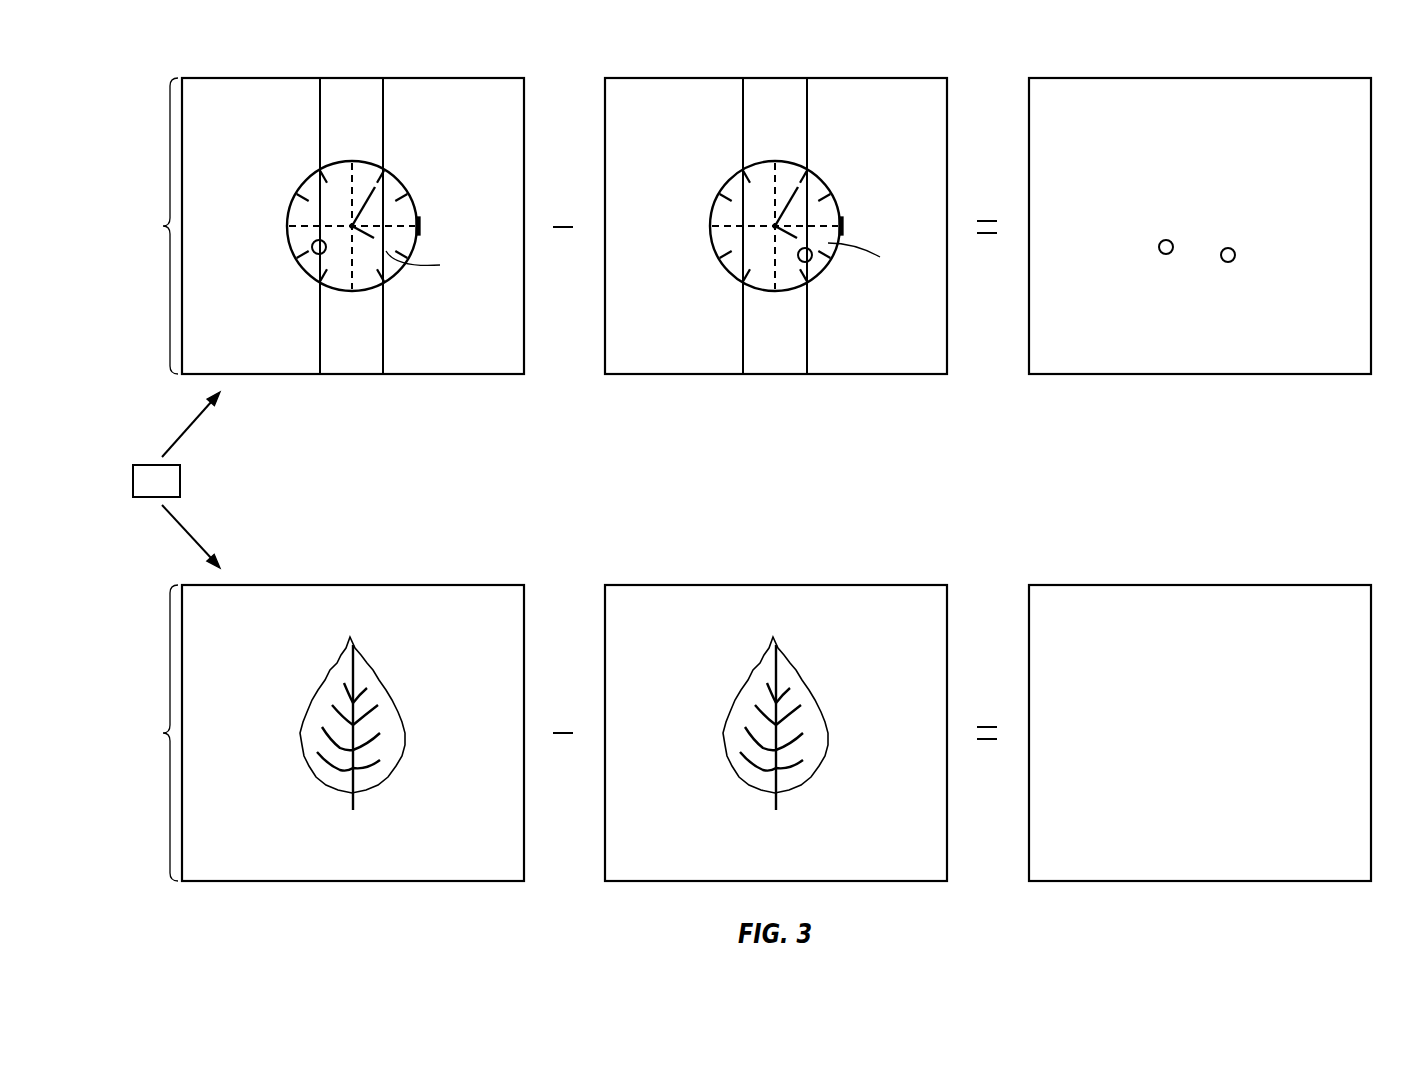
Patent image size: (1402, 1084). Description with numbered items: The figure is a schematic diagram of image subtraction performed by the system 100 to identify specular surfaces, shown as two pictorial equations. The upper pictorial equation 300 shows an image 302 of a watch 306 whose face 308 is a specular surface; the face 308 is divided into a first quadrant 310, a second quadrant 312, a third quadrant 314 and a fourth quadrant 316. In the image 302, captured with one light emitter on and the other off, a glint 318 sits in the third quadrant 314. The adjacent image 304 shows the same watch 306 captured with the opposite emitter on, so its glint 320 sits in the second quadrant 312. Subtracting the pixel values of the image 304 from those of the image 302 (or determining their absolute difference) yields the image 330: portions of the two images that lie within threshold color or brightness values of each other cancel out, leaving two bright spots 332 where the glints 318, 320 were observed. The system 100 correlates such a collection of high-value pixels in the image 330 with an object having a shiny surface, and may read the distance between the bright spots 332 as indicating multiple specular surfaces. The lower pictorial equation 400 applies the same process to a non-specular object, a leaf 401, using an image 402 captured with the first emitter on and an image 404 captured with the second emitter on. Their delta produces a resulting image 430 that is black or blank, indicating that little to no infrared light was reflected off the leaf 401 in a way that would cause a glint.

The system 100 is at (133, 480).
The pictorial equation 300 is at (163, 226).
The image 302 is at (355, 78).
The image 304 is at (778, 78).
The watch 306 is at (383, 128).
The face 308 is at (402, 183).
The first quadrant 310 is at (408, 206).
The second quadrant 312 is at (642, 262).
The third quadrant 314 is at (307, 267).
The fourth quadrant 316 is at (310, 204).
The glint 318 is at (312, 247).
The glint 320 is at (812, 259).
The image 330 is at (1200, 78).
The bright spots 332 is at (1166, 240).
The pictorial equation 400 is at (163, 733).
The leaf 401 is at (380, 679).
The image 402 is at (355, 585).
The image 404 is at (778, 585).
The resulting image 430 is at (1200, 585).